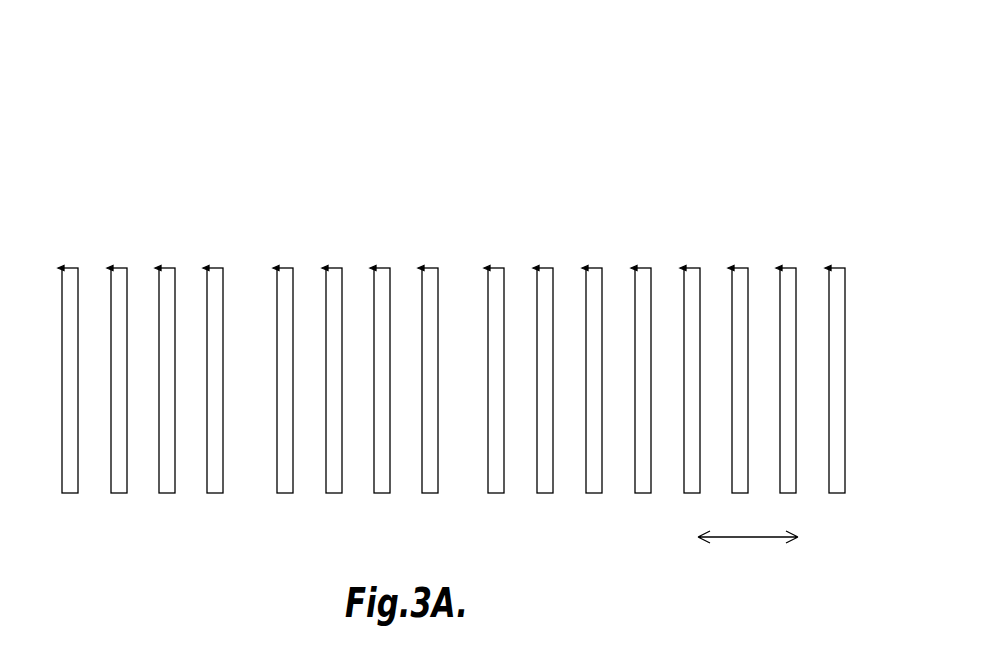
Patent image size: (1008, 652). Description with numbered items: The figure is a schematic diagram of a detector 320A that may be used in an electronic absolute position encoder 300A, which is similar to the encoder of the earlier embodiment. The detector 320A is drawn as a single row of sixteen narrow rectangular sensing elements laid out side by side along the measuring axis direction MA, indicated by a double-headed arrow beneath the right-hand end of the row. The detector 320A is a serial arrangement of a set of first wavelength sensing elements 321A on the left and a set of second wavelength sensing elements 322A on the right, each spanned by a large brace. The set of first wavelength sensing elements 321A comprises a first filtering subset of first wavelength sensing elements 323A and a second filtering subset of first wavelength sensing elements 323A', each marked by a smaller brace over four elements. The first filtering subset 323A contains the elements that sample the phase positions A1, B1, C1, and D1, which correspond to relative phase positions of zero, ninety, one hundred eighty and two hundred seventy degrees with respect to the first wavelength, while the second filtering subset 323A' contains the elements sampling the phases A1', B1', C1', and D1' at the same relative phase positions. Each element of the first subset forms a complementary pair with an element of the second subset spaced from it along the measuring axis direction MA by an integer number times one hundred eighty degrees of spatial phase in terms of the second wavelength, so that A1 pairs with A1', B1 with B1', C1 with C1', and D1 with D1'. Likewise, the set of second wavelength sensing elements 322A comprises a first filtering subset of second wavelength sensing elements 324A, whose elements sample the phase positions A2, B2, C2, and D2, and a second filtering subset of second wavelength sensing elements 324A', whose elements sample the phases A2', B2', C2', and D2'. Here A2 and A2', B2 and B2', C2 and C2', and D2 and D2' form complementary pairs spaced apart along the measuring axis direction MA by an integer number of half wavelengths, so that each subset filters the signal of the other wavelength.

The detector 320A is at (654, 79).
The electronic absolute position encoder 300A is at (458, 269).
The set of first wavelength sensing elements 321A is at (47, 172).
The set of second wavelength sensing elements 322A is at (482, 172).
The first filtering subset of first wavelength sensing elements 323A is at (142, 334).
The second filtering subset of first wavelength sensing elements 323A' is at (362, 334).
The first filtering subset of second wavelength sensing elements 324A is at (569, 334).
The second filtering subset of second wavelength sensing elements 324A' is at (772, 334).
The phase position A1 is at (68, 368).
The phase position B1 is at (118, 368).
The phase position C1 is at (166, 368).
The phase position D1 is at (215, 368).
The phase position A1' is at (287, 368).
The phase position B1' is at (337, 368).
The phase position C1' is at (385, 368).
The phase position D1' is at (433, 368).
The phase position A2 is at (494, 368).
The phase position B2 is at (544, 368).
The phase position C2 is at (593, 368).
The phase position D2 is at (643, 368).
The phase position A2' is at (695, 368).
The phase position B2' is at (743, 368).
The phase position C2' is at (791, 368).
The phase position D2' is at (841, 368).
The measuring axis direction MA is at (748, 554).